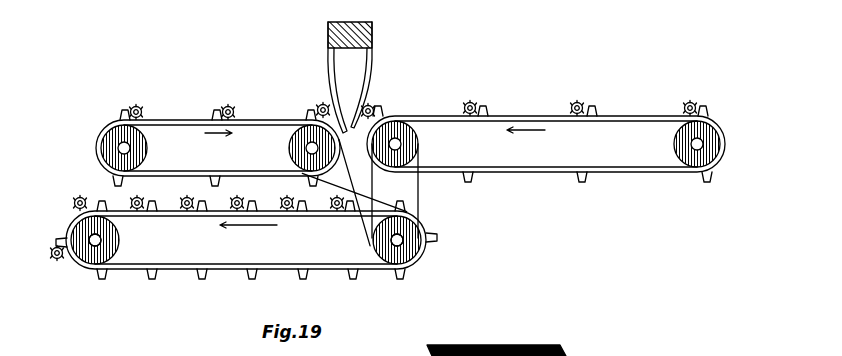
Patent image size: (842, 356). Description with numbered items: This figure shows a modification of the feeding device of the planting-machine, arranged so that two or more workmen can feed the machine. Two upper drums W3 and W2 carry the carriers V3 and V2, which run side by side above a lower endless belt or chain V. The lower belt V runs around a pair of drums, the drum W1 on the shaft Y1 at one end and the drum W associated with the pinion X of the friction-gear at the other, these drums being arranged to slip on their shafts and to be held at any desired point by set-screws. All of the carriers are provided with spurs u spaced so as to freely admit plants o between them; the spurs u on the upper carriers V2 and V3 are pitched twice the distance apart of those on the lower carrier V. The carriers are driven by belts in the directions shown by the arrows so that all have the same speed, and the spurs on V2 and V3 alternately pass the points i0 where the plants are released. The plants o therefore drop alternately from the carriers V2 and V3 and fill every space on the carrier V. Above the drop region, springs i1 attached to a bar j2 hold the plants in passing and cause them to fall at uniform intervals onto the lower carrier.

The carrier V3 is at (178, 120).
The drum W3 is at (138, 152).
The carrier V2 is at (612, 116).
The drum W2 is at (407, 150).
The endless belt or chain V is at (127, 270).
The drum W1 is at (108, 242).
The drum W is at (420, 245).
The shaft Y1 is at (93, 252).
The pinion X is at (393, 257).
The bar j2 is at (368, 37).
The spring i1 is at (332, 56).
The point i0 is at (321, 100).
The spur u is at (123, 110).
The plant o is at (135, 108).